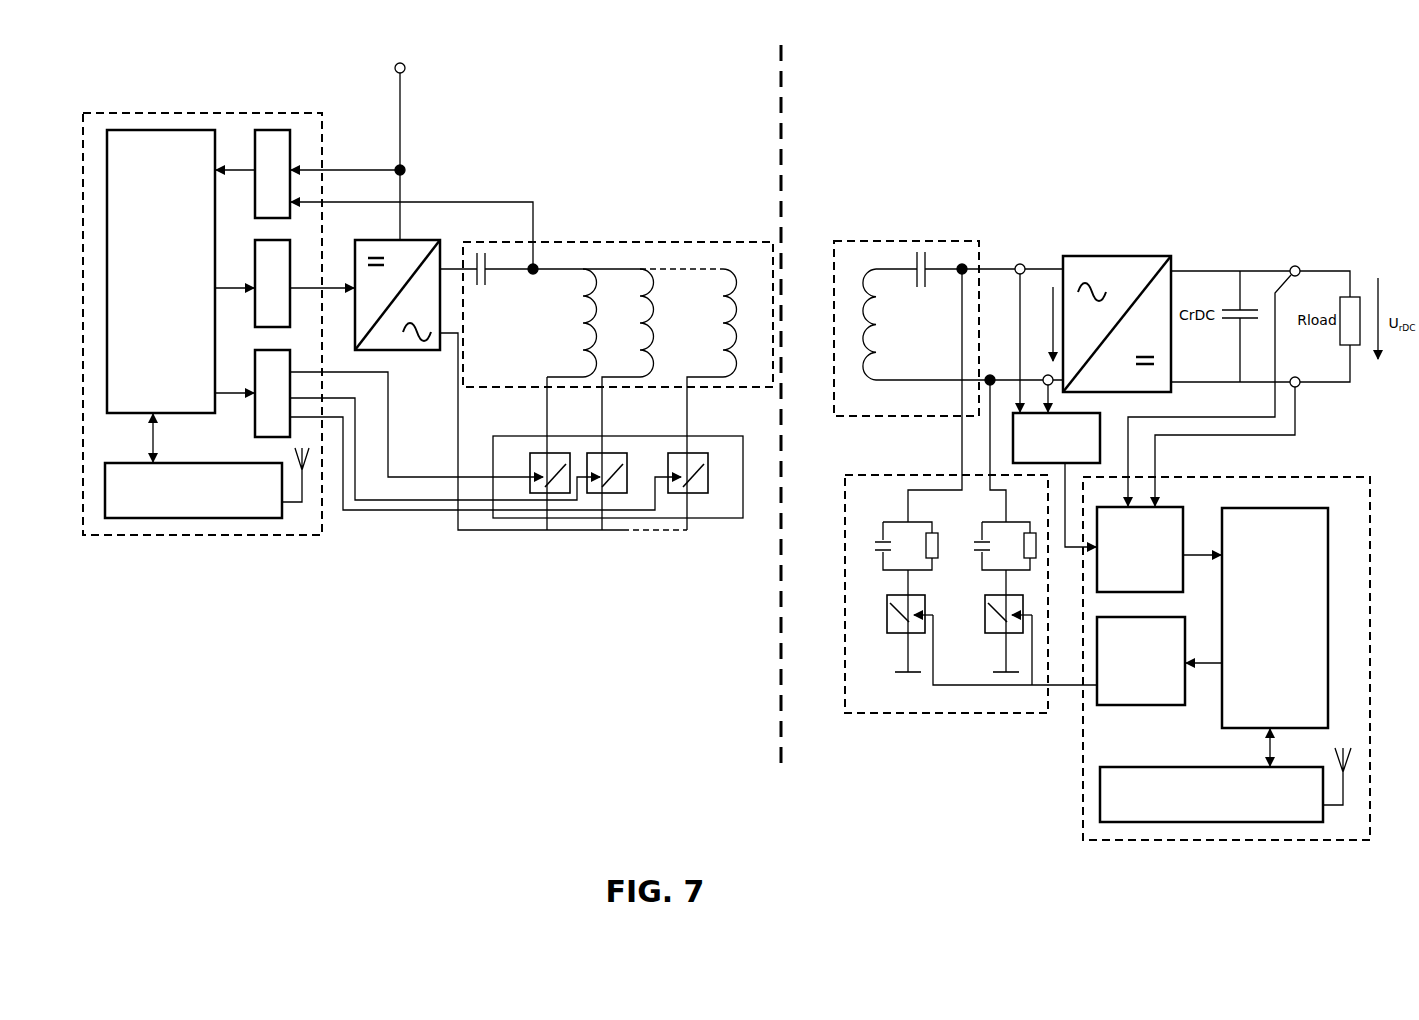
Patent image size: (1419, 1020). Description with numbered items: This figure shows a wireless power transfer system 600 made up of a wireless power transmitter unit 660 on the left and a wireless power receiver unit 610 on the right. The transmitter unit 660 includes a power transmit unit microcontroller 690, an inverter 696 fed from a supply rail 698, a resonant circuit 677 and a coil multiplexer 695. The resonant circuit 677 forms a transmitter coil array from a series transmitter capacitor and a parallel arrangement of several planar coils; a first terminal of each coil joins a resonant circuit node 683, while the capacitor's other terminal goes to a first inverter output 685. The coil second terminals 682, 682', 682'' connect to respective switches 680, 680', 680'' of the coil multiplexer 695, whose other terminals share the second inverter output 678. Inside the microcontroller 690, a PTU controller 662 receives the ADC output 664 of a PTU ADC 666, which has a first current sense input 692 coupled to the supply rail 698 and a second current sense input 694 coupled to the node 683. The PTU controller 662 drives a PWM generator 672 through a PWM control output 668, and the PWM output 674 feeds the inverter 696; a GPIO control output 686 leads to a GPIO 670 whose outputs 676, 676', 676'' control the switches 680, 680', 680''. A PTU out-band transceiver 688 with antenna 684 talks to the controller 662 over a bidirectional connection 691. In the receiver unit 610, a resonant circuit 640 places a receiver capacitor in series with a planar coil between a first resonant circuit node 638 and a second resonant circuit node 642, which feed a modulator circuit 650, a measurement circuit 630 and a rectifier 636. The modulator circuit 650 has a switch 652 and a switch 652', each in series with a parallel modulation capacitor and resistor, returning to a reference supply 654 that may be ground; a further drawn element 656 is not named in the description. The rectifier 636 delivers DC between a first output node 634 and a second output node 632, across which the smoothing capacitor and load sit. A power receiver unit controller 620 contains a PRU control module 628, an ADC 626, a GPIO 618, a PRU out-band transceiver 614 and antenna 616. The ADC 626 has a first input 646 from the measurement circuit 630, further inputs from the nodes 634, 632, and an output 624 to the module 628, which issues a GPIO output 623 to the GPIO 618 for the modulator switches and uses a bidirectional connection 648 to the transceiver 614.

The wireless power transfer system 600 is at (631, 801).
The wireless power receiver unit 610 is at (1097, 130).
The PRU out-band transceiver 614 is at (1178, 823).
The antenna 616 is at (1338, 806).
The general-purpose input output (GPIO) 618 is at (1170, 707).
The power receiver unit controller 620 is at (1083, 805).
The GPIO output 623 is at (1210, 667).
The ADC output 624 is at (1187, 560).
The analog to digital converter (ADC) 626 is at (1187, 508).
The PRU control module 628 is at (1328, 563).
The measurement circuit 630 is at (1100, 448).
The second output node 632 is at (1300, 392).
The first output node 634 is at (1293, 267).
The rectifier 636 is at (1095, 256).
The first resonant circuit node 638 is at (1022, 263).
The resonant circuit 640 is at (868, 241).
The second resonant circuit node 642 is at (1043, 378).
The first input 646 is at (1065, 512).
The bidirectional connection 648 is at (1272, 742).
The modulator circuit 650 is at (892, 713).
The switch 652 is at (862, 621).
The switch 652' is at (985, 621).
The reference supply 654 is at (908, 670).
The measurement impedance network 656 is at (947, 686).
The wireless power transmitter unit 660 is at (540, 87).
The PTU controller 662 is at (130, 129).
The ADC output 664 is at (242, 170).
The PTU ADC 666 is at (283, 130).
The PWM control output 668 is at (242, 283).
The GPIO 670 is at (292, 410).
The PWM generator 672 is at (290, 268).
The PWM output 674 is at (290, 293).
The GPIO output 676 is at (416, 424).
The GPIO output 676' is at (445, 477).
The GPIO output 676'' is at (485, 497).
The resonant circuit 677 is at (603, 240).
The second inverter output 678 is at (540, 532).
The switch 680 is at (592, 528).
The switch 680' is at (662, 523).
The switch 680'' is at (744, 461).
The second terminal 682 is at (519, 453).
The second terminal 682' is at (639, 399).
The second terminal 682'' is at (725, 399).
The resonant circuit node 683 is at (447, 273).
The antenna 684 is at (308, 502).
The first inverter output 685 is at (555, 269).
The GPIO control output 686 is at (243, 395).
The PTU out-band transceiver 688 is at (207, 518).
The power transmit unit microcontroller 690 is at (142, 537).
The bidirectional connection 691 is at (150, 450).
The first current sense input 692 is at (382, 167).
The second current sense input 694 is at (522, 197).
The coil multiplexer 695 is at (732, 518).
The inverter 696 is at (418, 238).
The supply rail 698 is at (410, 63).